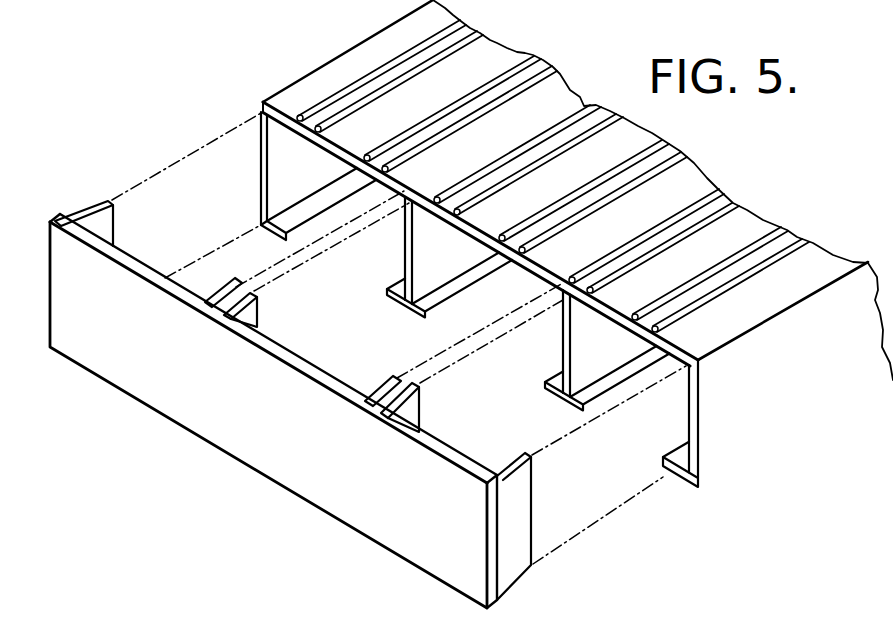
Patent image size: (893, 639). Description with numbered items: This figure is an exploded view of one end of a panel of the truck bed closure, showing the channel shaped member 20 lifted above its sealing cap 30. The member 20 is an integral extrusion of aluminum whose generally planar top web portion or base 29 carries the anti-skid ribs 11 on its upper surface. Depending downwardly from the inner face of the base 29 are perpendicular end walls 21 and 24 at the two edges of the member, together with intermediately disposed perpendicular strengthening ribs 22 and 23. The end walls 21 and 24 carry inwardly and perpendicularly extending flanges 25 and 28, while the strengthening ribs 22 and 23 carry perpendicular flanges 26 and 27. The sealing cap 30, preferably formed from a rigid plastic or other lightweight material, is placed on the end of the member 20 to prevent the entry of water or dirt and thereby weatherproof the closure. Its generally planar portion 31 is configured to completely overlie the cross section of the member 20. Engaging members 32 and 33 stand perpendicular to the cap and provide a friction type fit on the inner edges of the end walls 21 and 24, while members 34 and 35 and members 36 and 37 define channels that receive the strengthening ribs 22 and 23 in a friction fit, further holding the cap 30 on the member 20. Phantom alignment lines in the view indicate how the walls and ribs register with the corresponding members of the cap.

The anti-skid ribs 11 is at (382, 65).
The channel shaped member 20 is at (323, 62).
The end wall 21 is at (261, 178).
The strengthening rib 22 is at (405, 246).
The strengthening rib 23 is at (563, 340).
The end wall 24 is at (689, 410).
The flange 25 is at (284, 240).
The flange 26 is at (422, 316).
The flange 27 is at (546, 388).
The flange 28 is at (680, 480).
The planar top web portion 29 is at (561, 208).
The sealing cap 30 is at (100, 394).
The planar portion 31 is at (160, 392).
The engaging member 32 is at (105, 202).
The engaging member 33 is at (530, 458).
The channel-defining member 34 is at (224, 286).
The channel-defining member 35 is at (250, 296).
The channel-defining member 36 is at (386, 378).
The channel-defining member 37 is at (416, 392).